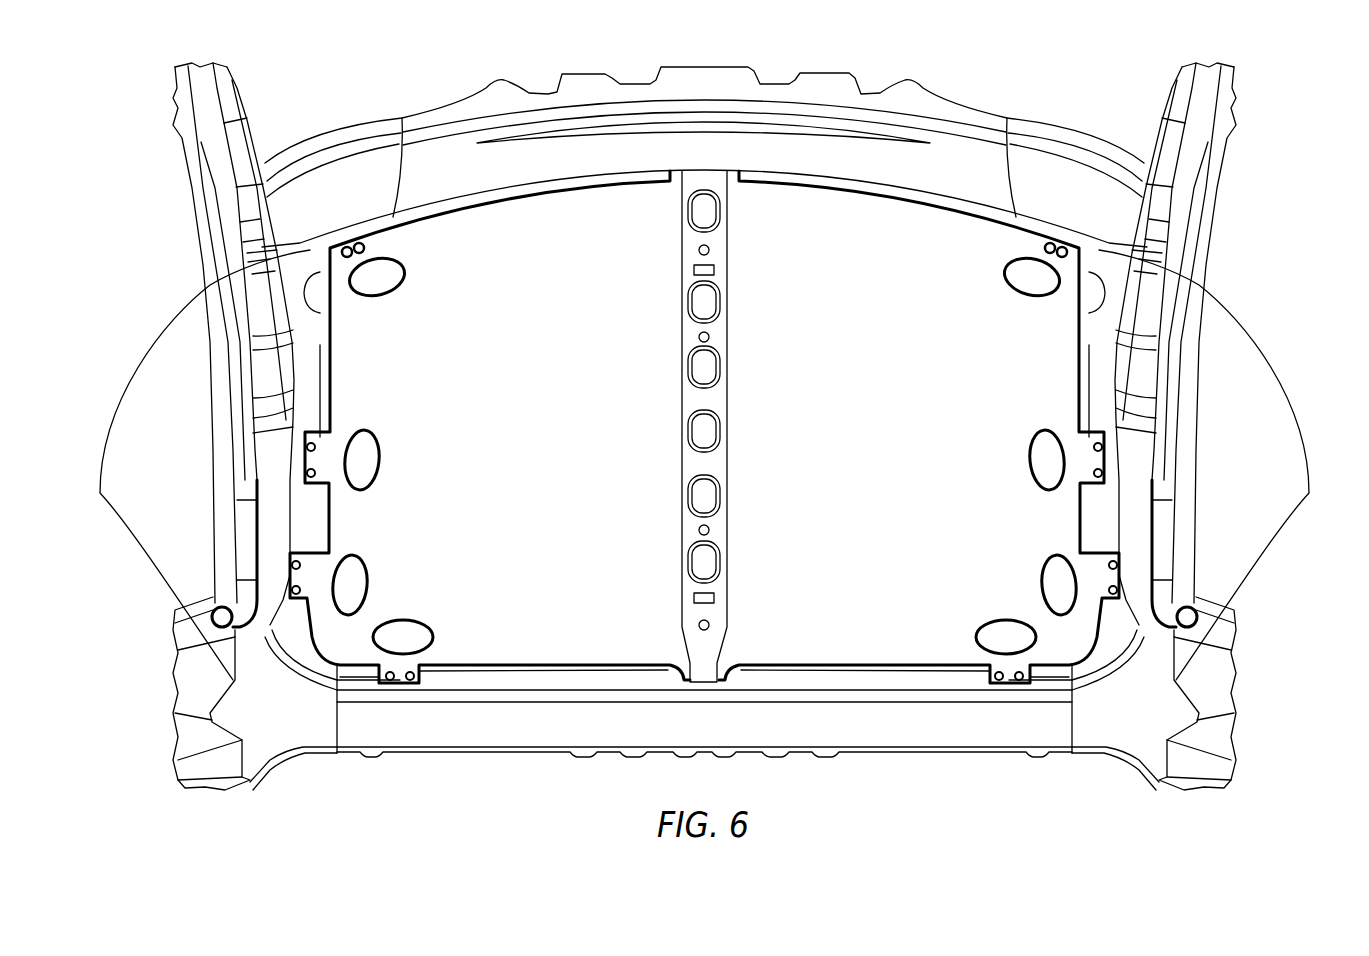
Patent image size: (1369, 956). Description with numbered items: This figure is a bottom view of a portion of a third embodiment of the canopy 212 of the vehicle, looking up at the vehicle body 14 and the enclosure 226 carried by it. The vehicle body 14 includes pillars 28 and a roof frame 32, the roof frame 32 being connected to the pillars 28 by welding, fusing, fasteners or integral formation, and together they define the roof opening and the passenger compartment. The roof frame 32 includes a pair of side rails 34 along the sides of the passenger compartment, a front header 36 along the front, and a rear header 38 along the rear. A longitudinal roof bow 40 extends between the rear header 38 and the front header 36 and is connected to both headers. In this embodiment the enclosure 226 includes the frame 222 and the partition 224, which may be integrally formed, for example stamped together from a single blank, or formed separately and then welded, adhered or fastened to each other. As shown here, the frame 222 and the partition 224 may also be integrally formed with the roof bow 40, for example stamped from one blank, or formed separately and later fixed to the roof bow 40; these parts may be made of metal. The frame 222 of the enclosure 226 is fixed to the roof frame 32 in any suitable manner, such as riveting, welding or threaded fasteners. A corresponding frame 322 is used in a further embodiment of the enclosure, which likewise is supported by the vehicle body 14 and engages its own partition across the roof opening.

The vehicle body 14 is at (628, 726).
The pillars 28 is at (193, 128).
The roof frame 32 is at (903, 762).
The side rails 34 is at (217, 387).
The front header 36 is at (918, 140).
The rear header 38 is at (550, 733).
The longitudinal roof bow 40 is at (681, 252).
The canopy 212 is at (1040, 72).
The frame 222 is at (293, 578).
The partition 224 is at (515, 463).
The enclosure 226 is at (485, 668).
The frame 322 is at (1116, 578).